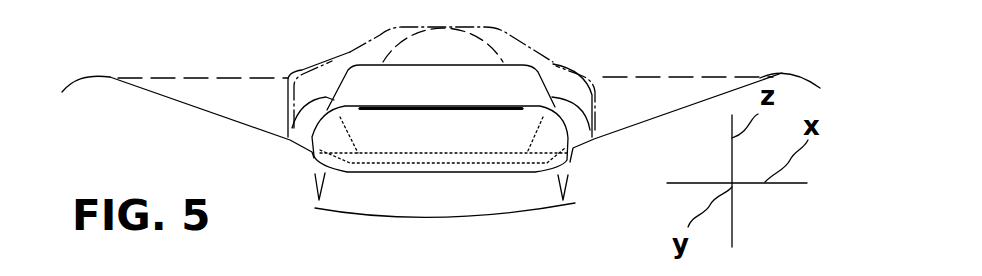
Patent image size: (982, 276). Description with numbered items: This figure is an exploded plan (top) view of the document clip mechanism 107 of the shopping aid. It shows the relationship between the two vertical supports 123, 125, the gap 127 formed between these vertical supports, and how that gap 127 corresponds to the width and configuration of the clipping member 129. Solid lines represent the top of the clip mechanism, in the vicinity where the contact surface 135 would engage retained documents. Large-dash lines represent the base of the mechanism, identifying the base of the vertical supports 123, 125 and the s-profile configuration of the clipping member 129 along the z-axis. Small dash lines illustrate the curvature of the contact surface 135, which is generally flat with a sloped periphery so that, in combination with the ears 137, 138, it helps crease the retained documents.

The document clip mechanism 107 is at (357, 37).
The vertical support 123 is at (782, 73).
The vertical support 125 is at (110, 78).
The gap 127 is at (440, 217).
The clipping member 129 is at (540, 87).
The contact surface 135 is at (440, 160).
The ear 137 is at (688, 106).
The ear 138 is at (183, 102).